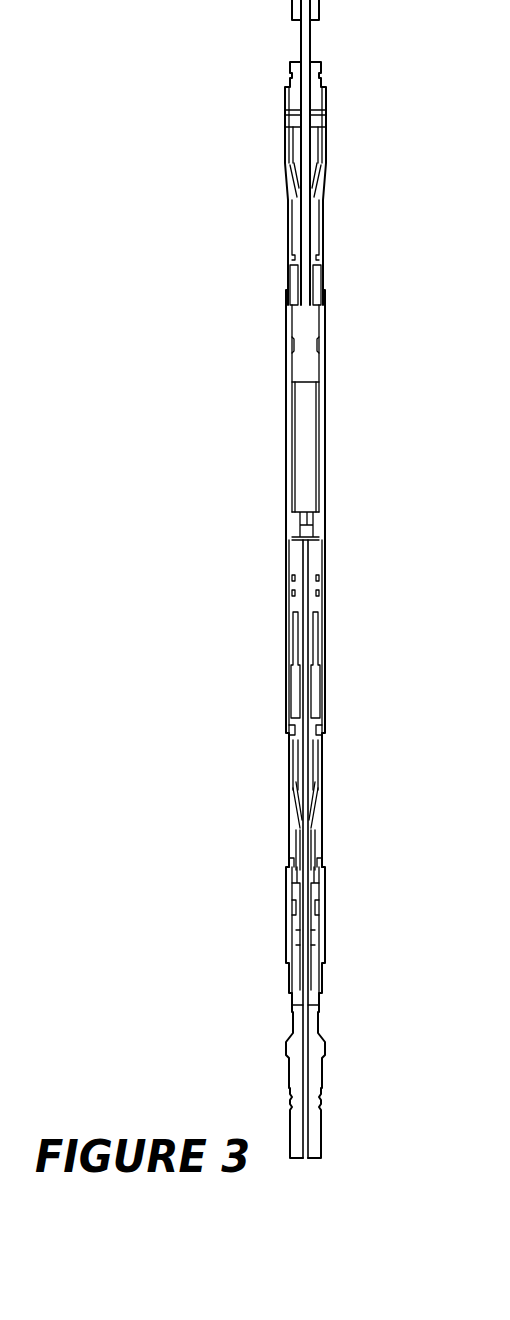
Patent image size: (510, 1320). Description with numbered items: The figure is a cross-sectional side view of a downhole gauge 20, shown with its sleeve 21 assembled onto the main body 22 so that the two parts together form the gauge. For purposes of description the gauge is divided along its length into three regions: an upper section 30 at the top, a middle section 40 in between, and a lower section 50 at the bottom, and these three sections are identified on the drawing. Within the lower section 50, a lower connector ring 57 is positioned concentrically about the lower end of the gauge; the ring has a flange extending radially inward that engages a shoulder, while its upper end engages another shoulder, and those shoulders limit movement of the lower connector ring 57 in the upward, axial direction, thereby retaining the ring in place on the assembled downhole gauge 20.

The downhole gauge 20 is at (377, 523).
The sleeve 21 is at (325, 291).
The main body 22 is at (306, 226).
The upper section 30 is at (262, 158).
The middle section 40 is at (263, 575).
The lower section 50 is at (262, 893).
The lower connector ring 57 is at (323, 884).